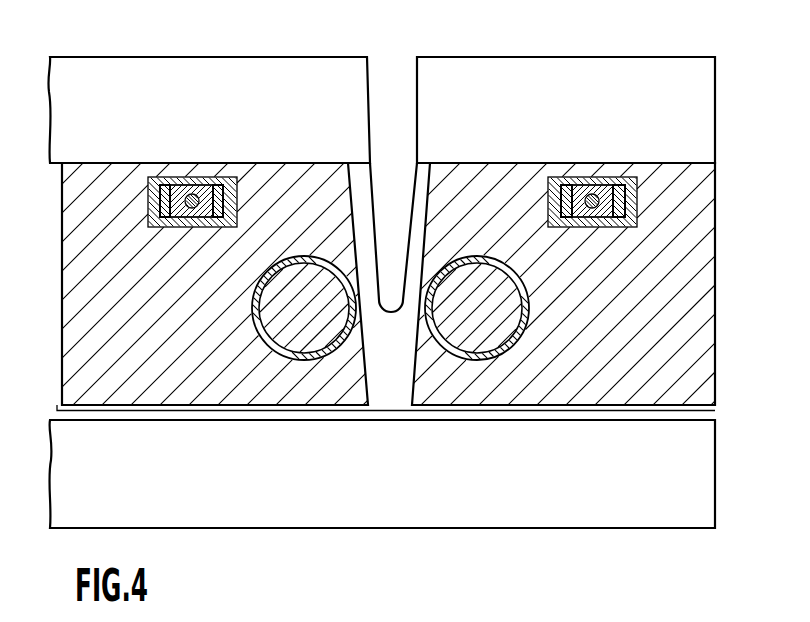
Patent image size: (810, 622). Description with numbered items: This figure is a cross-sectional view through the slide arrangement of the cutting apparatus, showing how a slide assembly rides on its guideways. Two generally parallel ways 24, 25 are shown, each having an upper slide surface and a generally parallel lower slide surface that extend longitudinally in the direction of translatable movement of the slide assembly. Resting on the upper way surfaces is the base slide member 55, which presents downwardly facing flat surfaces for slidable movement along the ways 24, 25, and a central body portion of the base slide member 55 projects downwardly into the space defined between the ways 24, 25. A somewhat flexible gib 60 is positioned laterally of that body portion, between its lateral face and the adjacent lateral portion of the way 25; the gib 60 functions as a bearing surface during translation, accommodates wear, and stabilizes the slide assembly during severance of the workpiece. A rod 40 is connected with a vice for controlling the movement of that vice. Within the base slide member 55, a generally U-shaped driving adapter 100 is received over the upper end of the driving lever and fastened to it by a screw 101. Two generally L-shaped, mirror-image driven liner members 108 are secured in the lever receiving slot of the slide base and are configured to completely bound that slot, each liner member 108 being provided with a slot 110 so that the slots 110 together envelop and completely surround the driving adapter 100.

The way 24 is at (261, 82).
The way 25 is at (708, 455).
The rod 40 is at (510, 311).
The base slide member 55 is at (717, 280).
The gib 60 is at (58, 411).
The driving adapter 100 is at (610, 185).
The screw 101 is at (592, 185).
The driven liner member 108 is at (550, 190).
The slot 110 is at (560, 186).